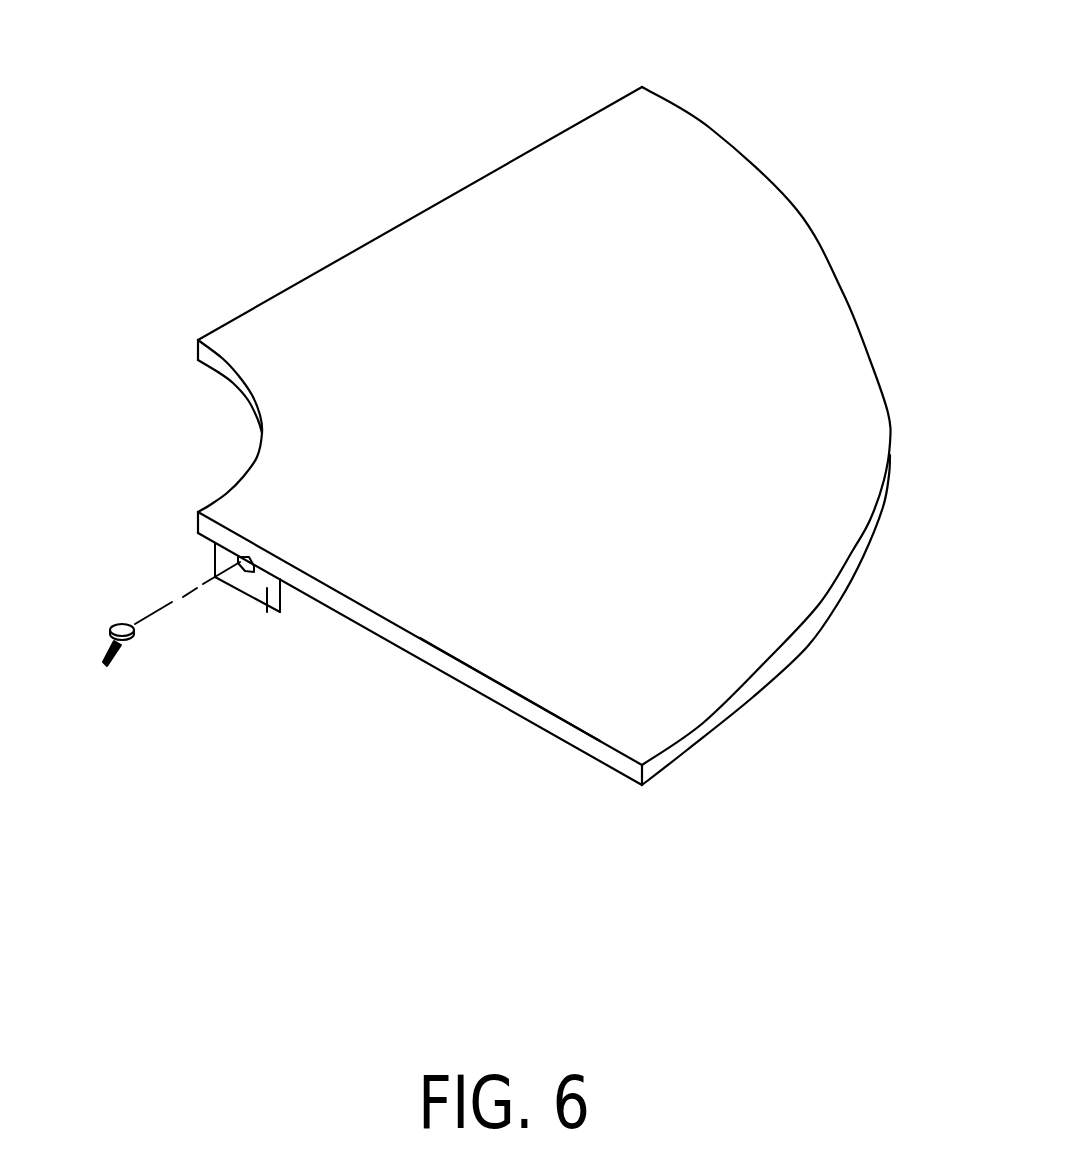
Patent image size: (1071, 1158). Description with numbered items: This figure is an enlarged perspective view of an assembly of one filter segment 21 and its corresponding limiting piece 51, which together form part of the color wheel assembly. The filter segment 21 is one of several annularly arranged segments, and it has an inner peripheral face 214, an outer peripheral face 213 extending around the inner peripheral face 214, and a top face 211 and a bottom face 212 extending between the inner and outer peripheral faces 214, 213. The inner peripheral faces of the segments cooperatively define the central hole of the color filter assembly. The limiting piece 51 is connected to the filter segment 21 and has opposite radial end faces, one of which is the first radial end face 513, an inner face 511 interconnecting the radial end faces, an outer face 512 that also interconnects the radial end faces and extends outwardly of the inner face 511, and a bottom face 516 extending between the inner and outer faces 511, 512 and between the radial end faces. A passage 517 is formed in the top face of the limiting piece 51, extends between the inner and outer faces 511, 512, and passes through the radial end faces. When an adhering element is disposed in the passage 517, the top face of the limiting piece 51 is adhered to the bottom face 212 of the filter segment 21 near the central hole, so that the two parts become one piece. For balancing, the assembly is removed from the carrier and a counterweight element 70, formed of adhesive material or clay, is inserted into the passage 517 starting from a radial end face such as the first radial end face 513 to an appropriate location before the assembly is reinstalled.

The filter segment 21 is at (470, 445).
The top face 211 is at (687, 197).
The bottom face 212 is at (562, 739).
The outer peripheral face 213 is at (833, 603).
The inner peripheral face 214 is at (214, 372).
The limiting piece 51 is at (274, 660).
The inner face 511 is at (213, 563).
The outer face 512 is at (287, 600).
The first radial end face 513 is at (267, 590).
The bottom face 516 is at (249, 597).
The passage 517 is at (245, 563).
The counterweight element 70 is at (103, 667).